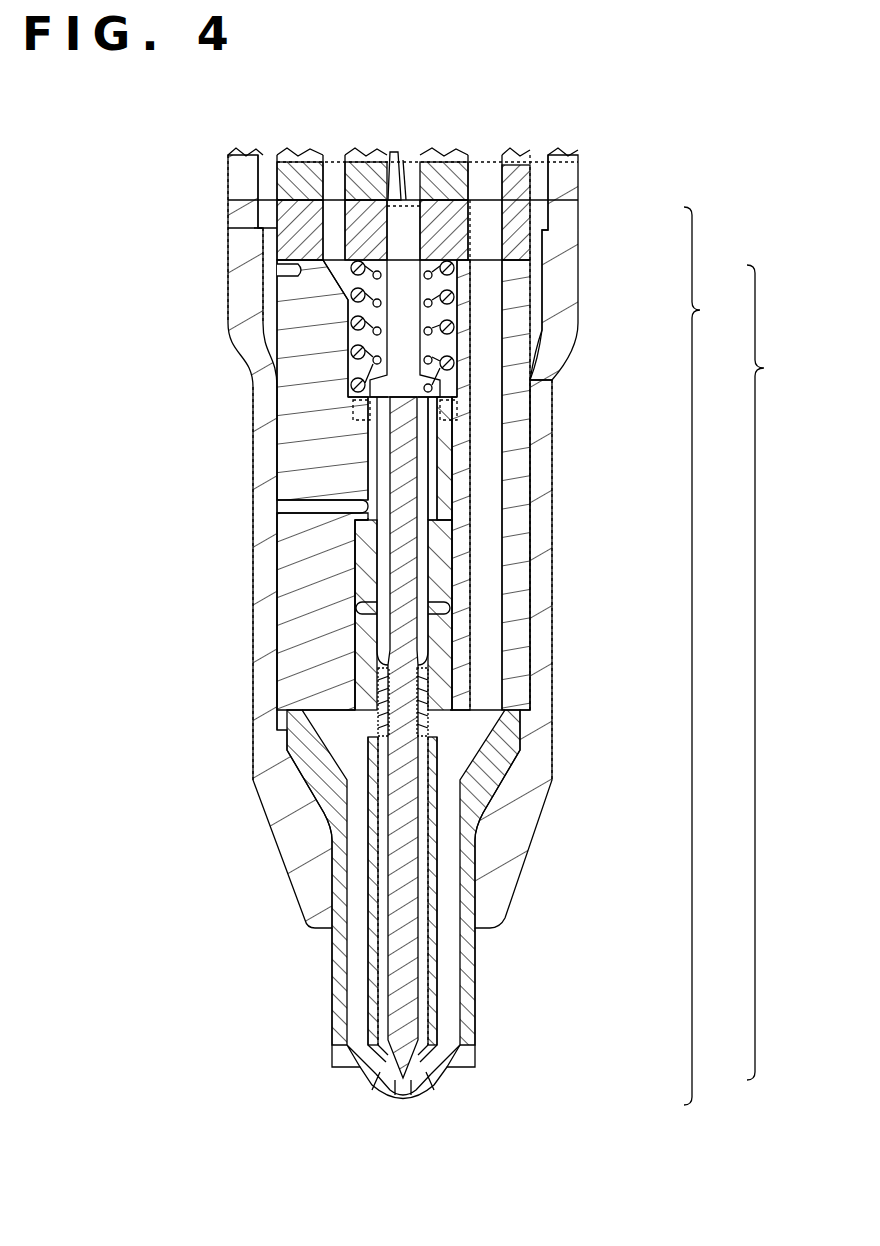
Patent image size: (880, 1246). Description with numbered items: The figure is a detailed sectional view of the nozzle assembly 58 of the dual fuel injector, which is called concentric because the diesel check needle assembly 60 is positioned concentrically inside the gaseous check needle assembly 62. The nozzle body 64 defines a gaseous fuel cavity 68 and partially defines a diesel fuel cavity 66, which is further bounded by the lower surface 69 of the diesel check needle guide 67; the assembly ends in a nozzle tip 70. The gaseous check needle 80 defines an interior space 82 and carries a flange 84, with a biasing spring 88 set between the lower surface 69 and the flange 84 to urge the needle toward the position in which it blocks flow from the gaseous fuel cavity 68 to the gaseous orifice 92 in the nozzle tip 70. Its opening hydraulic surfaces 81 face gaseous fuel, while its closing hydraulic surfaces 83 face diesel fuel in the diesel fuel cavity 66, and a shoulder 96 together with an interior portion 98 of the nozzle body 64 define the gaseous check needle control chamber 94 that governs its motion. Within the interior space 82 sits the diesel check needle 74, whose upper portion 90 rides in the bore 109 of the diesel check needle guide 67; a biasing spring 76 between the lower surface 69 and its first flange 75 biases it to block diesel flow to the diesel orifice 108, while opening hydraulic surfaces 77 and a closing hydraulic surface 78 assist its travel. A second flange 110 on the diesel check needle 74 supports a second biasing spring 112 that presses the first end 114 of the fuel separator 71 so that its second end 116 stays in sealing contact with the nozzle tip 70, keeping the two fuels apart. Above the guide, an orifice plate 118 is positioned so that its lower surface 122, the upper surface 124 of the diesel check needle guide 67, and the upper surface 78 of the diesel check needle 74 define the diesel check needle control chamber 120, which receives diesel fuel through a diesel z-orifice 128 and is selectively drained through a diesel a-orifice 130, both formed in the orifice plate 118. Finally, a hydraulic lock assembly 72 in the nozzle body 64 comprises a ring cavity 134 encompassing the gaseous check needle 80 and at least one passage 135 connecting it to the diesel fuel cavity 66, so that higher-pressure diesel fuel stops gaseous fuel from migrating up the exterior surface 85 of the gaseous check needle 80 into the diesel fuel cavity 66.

The nozzle assembly 58 is at (622, 102).
The diesel check needle assembly 60 is at (707, 656).
The gaseous check needle assembly 62 is at (773, 672).
The nozzle body 64 is at (515, 422).
The diesel fuel cavity 66 is at (455, 315).
The diesel check needle guide 67 is at (515, 220).
The gaseous fuel cavity 68 is at (460, 740).
The lower surface 69 is at (300, 270).
The nozzle tip 70 is at (467, 1052).
The fuel separator 71 is at (425, 957).
The hydraulic lock assembly 72 is at (505, 620).
The diesel check needle 74 is at (400, 542).
The first flange 75 is at (345, 368).
The biasing spring 76 is at (445, 273).
The opening hydraulic surfaces 77 is at (370, 400).
The closing hydraulic surface 78 is at (422, 215).
The gaseous check needle 80 is at (455, 878).
The opening hydraulic surfaces 81 is at (380, 748).
The interior space 82 is at (430, 555).
The closing hydraulic surfaces 83 is at (470, 380).
The flange 84 is at (468, 398).
The exterior surface 85 is at (453, 567).
The biasing spring 88 is at (448, 335).
The upper portion 90 is at (500, 202).
The gaseous orifice 92 is at (345, 1037).
The gaseous check needle control chamber 94 is at (350, 508).
The shoulder 96 is at (447, 512).
The interior portion 98 is at (440, 518).
The diesel orifice 108 is at (427, 1100).
The bore 109 is at (368, 244).
The second flange 110 is at (385, 675).
The second biasing spring 112 is at (427, 695).
The first end 114 is at (352, 740).
The second end 116 is at (427, 1040).
The orifice plate 118 is at (288, 178).
The diesel check needle control chamber 120 is at (415, 205).
The lower surface 122 is at (258, 212).
The upper surface 124 is at (550, 163).
The diesel z-orifice 128 is at (392, 175).
The diesel a-orifice 130 is at (410, 178).
The ring cavity 134 is at (355, 608).
The passage 135 is at (450, 603).